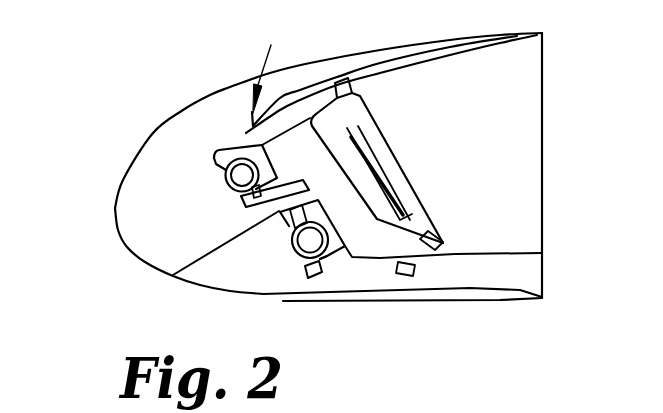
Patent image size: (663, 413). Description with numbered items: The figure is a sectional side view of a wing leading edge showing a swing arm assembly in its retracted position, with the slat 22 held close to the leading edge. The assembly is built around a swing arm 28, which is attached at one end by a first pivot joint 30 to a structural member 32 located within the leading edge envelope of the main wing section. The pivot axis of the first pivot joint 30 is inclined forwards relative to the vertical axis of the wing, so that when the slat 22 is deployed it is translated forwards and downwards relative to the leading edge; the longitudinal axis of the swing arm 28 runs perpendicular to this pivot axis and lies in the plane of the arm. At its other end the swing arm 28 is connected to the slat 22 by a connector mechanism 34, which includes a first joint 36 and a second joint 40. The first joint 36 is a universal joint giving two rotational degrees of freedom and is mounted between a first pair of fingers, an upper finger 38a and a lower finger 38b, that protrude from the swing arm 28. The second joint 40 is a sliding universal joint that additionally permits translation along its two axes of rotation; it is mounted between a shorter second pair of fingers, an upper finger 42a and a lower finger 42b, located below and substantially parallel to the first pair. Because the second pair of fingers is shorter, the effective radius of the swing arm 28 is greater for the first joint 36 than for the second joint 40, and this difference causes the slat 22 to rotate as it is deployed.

The slat 22 is at (148, 233).
The swing arm 28 is at (290, 123).
The first pivot joint 30 is at (363, 134).
The structural member 32 is at (523, 110).
The connector mechanism 34 is at (270, 64).
The first joint 36 is at (242, 175).
The upper finger 38a is at (219, 150).
The lower finger 38b is at (243, 203).
The second joint 40 is at (296, 250).
The upper finger 42a is at (173, 275).
The lower finger 42b is at (313, 277).